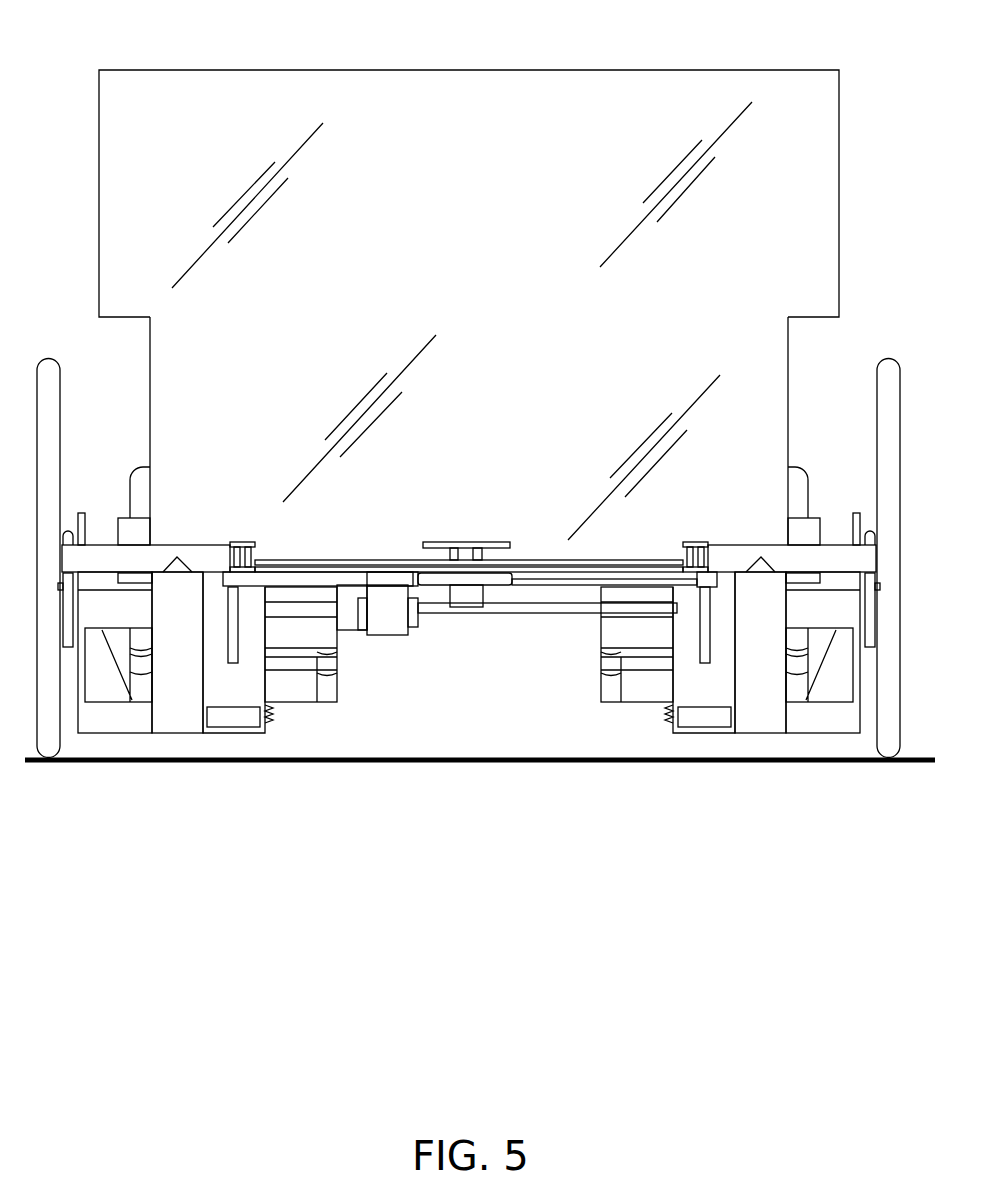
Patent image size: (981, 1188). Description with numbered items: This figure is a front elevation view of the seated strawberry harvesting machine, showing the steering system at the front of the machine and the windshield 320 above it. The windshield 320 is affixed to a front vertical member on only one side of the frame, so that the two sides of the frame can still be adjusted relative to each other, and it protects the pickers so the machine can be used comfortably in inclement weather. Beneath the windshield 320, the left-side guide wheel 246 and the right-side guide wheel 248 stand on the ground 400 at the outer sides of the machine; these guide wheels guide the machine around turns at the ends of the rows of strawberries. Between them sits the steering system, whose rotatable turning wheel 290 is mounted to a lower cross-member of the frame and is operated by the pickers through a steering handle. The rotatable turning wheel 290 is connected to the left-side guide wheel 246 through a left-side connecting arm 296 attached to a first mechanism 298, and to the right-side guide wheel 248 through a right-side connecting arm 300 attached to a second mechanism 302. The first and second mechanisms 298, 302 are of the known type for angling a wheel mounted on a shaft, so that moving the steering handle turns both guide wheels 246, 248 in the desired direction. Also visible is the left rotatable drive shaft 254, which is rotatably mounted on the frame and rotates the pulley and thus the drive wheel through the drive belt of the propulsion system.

The windshield 320 is at (253, 88).
The right-side guide wheel 248 is at (52, 413).
The left-side guide wheel 246 is at (884, 413).
The rotatable turning wheel 290 is at (467, 593).
The left rotatable drive shaft 254 is at (548, 606).
The second mechanism 302 is at (217, 596).
The right-side connecting arm 300 is at (303, 582).
The left-side connecting arm 296 is at (587, 584).
The first mechanism 298 is at (690, 596).
The ground 400 is at (470, 743).